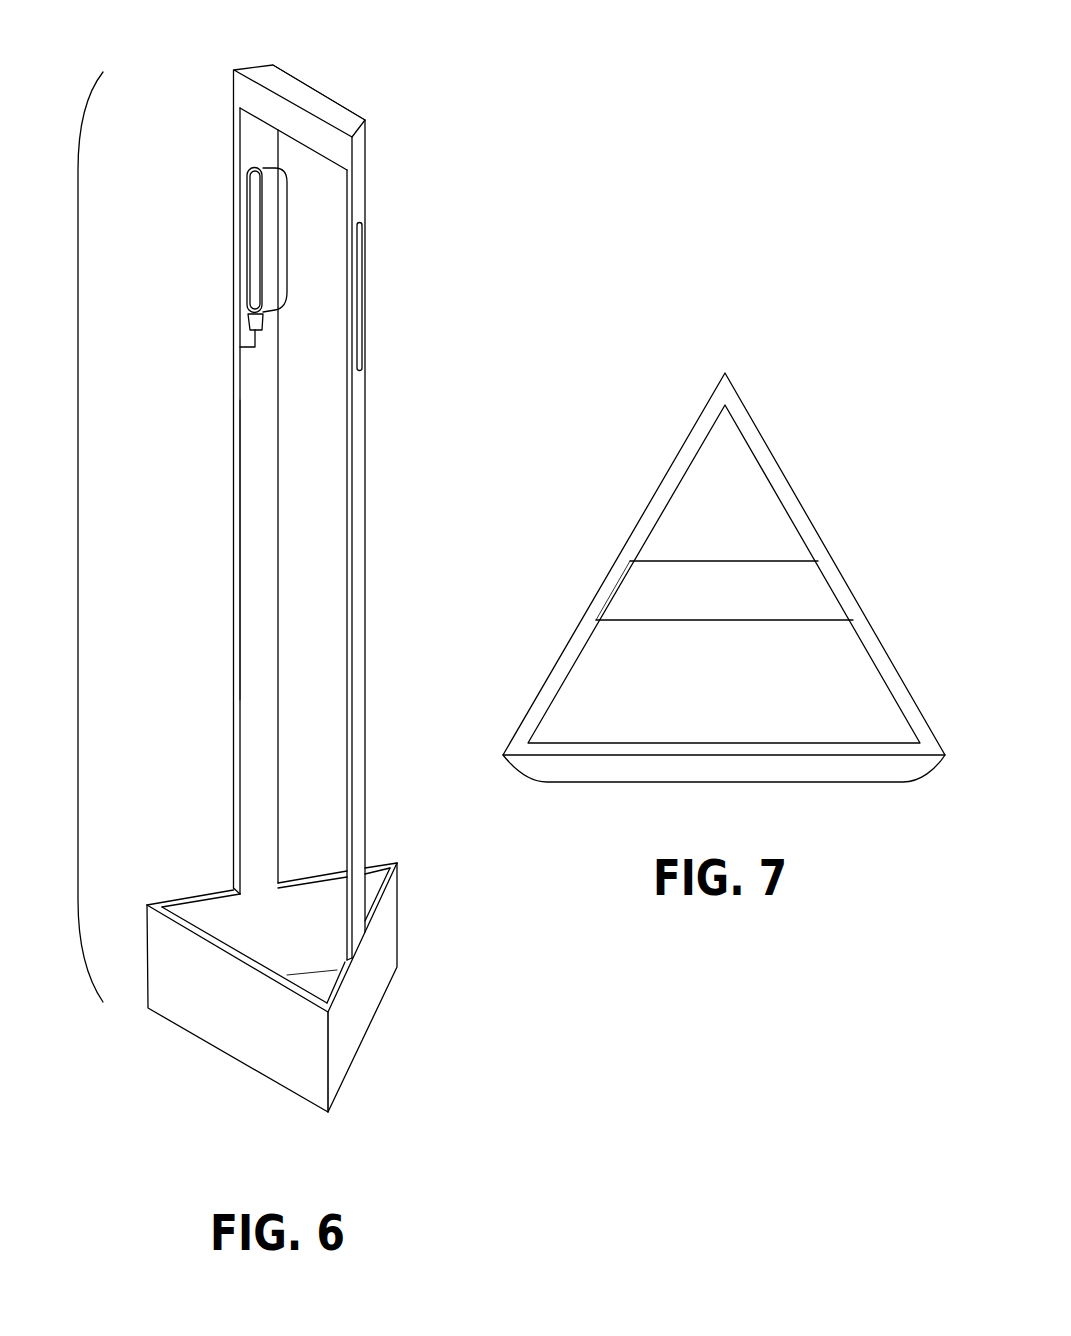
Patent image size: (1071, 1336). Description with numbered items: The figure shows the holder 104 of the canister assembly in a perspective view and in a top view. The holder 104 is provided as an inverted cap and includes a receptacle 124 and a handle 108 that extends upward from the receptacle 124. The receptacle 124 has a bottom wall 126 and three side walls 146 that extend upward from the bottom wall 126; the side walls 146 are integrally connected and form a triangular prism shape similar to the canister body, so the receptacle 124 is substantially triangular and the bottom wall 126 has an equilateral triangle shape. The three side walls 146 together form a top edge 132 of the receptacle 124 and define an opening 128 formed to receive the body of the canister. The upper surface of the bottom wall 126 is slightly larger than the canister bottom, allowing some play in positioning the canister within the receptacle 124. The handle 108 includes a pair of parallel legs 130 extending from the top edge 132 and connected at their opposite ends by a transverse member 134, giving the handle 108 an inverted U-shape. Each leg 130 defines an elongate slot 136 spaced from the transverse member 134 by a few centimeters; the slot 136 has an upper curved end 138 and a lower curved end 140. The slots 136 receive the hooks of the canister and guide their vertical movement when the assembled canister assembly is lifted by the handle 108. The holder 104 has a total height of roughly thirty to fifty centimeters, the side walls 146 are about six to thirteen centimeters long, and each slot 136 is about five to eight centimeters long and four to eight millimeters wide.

In FIG. 6, the holder 104 is at (217, 82).
In FIG. 7, the holder 104 is at (675, 386).
In FIG. 6, the handle 108 is at (211, 508).
In FIG. 7, the handle 108 is at (638, 600).
In FIG. 6, the receptacle 124 is at (253, 1033).
In FIG. 6, the bottom wall 126 is at (315, 985).
In FIG. 7, the bottom wall 126 is at (705, 525).
In FIG. 6, the opening 128 is at (235, 923).
In FIG. 6, the legs 130 is at (265, 583).
In FIG. 6, the top edge 132 is at (373, 910).
In FIG. 7, the top edge 132 is at (733, 412).
In FIG. 6, the transverse member 134 is at (313, 107).
In FIG. 7, the transverse member 134 is at (798, 580).
In FIG. 6, the slot 136 is at (470, 242).
In FIG. 6, the upper curved end 138 is at (262, 167).
In FIG. 6, the lower curved end 140 is at (248, 314).
In FIG. 6, the side walls 146 is at (337, 1033).